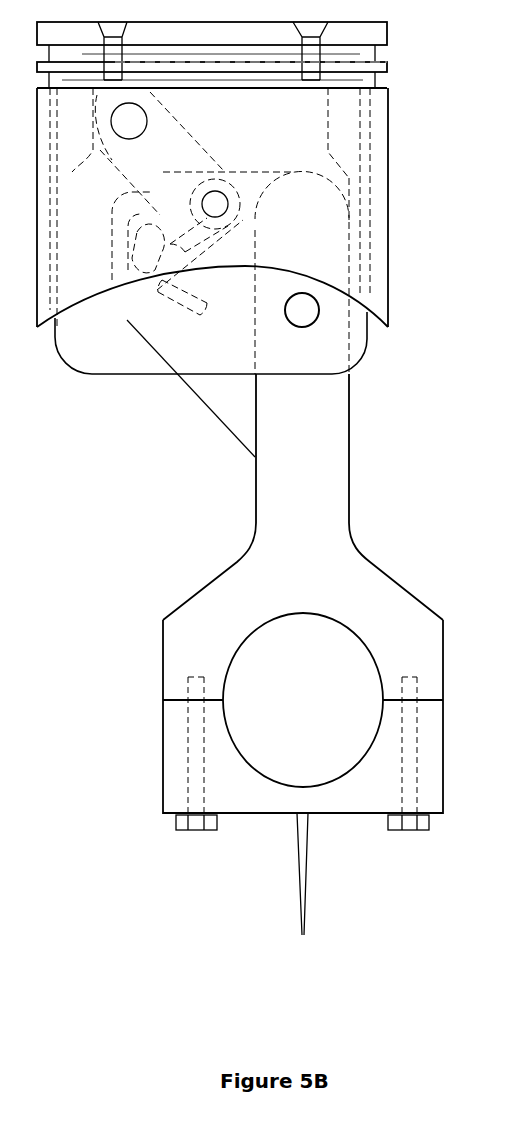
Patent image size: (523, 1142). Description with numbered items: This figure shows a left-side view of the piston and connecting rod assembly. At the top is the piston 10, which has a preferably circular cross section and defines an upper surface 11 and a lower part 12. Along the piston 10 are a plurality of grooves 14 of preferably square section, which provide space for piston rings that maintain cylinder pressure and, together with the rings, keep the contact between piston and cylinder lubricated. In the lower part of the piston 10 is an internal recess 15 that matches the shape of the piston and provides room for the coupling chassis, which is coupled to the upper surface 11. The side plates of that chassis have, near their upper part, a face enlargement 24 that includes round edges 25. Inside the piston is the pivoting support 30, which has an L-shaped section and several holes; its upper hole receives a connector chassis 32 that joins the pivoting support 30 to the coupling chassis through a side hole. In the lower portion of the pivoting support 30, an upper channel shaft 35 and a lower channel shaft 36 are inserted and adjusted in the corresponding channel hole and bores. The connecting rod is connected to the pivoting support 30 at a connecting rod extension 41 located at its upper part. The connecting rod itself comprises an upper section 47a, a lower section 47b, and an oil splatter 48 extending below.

The piston 10 is at (40, 320).
The upper surface 11 is at (387, 40).
The lower part 12 is at (390, 332).
The grooves 14 is at (47, 80).
The internal recess 15 is at (350, 132).
The face enlargement 24 is at (68, 235).
The round edges 25 is at (350, 208).
The pivoting support 30 is at (203, 163).
The connector chassis 32 is at (134, 128).
The upper channel shaft 35 is at (222, 205).
The lower channel shaft 36 is at (143, 266).
The connecting rod extension 41 is at (221, 402).
The upper section 47a is at (195, 670).
The lower section 47b is at (178, 800).
The oil splatter 48 is at (298, 898).